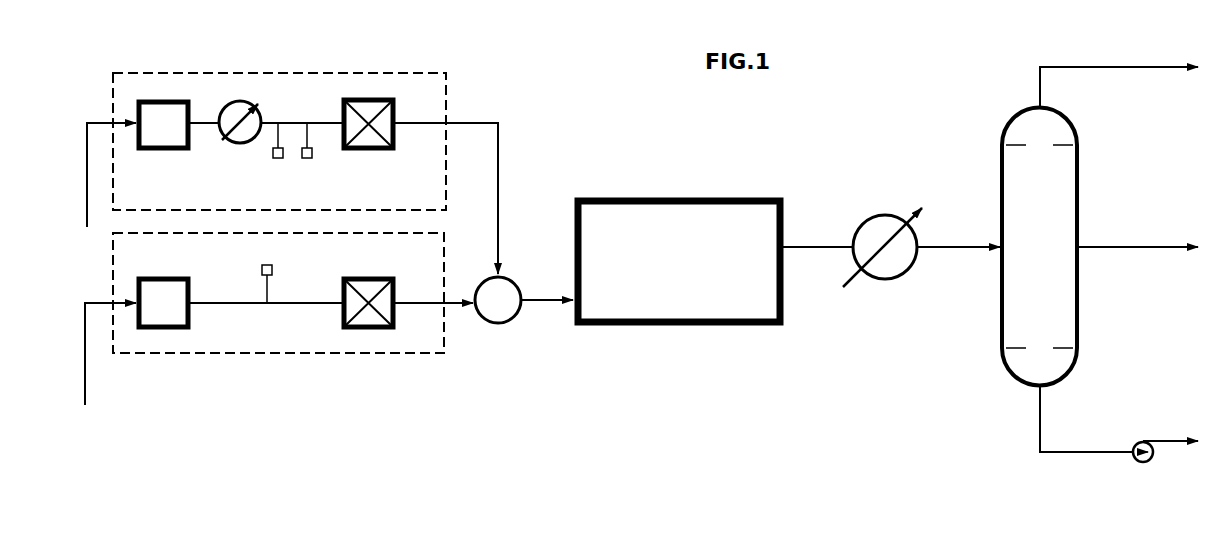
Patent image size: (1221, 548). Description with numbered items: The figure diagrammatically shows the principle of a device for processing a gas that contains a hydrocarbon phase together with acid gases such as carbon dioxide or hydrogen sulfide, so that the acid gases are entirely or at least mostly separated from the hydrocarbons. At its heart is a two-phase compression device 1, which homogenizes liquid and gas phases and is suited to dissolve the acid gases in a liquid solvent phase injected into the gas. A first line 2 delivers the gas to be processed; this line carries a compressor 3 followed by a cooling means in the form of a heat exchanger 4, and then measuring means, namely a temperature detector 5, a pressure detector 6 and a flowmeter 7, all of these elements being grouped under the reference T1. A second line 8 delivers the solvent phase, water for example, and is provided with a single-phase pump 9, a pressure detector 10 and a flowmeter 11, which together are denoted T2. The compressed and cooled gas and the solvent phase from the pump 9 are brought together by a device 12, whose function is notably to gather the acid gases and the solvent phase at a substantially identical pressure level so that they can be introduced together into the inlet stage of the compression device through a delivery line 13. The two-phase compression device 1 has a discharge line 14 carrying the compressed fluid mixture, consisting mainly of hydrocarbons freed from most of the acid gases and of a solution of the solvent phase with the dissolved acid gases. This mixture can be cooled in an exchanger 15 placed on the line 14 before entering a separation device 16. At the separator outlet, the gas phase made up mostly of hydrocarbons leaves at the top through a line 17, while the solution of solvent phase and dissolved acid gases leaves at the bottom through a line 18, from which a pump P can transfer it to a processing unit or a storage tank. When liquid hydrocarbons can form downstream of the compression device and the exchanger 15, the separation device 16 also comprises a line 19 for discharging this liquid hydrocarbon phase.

The two-phase compression device 1 is at (679, 261).
The first line 2 is at (100, 118).
The compressor 3 is at (179, 125).
The heat exchanger 4 is at (243, 143).
The temperature detector 5 is at (282, 160).
The pressure detector 6 is at (311, 160).
The flowmeter 7 is at (378, 152).
The second feed line 8 is at (87, 382).
The single-phase pump 9 is at (240, 303).
The pressure detector 10 is at (263, 264).
The flowmeter 11 is at (350, 277).
The device 12 is at (510, 321).
The delivery line 13 is at (548, 304).
The discharge line 14 is at (836, 245).
The exchanger 15 is at (897, 215).
The separation device 16 is at (1039, 247).
The line 17 is at (1157, 67).
The line 18 is at (1085, 452).
The line 19 is at (1153, 245).
The first line elements T1 is at (446, 73).
The second line elements T2 is at (444, 353).
The pump P is at (1165, 436).